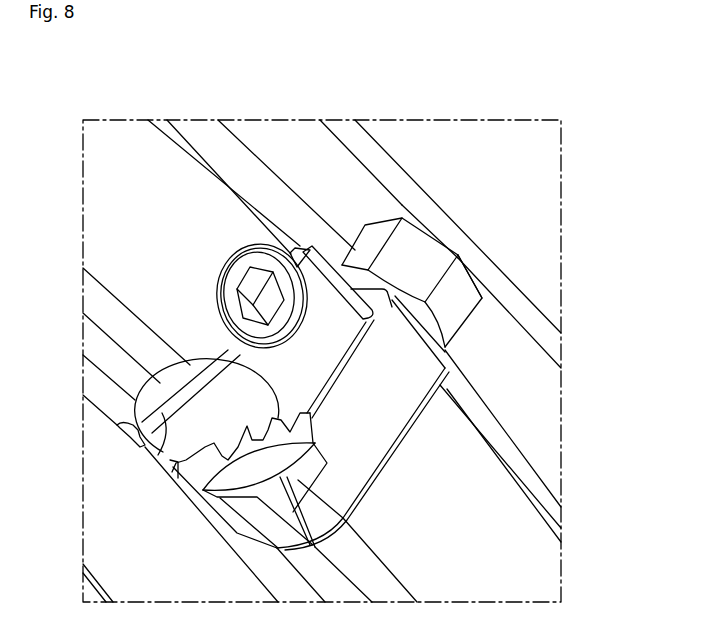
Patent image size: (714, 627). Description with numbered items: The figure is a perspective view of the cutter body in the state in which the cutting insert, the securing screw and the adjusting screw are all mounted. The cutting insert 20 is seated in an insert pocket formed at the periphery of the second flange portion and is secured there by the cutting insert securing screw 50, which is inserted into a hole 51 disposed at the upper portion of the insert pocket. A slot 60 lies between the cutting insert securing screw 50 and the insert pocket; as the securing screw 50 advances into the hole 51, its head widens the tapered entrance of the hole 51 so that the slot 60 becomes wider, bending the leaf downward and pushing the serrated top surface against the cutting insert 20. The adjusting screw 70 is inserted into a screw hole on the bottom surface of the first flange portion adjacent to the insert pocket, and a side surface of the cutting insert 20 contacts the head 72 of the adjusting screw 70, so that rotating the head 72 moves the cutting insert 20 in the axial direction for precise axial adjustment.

The cutting insert 20 is at (407, 397).
The cutting insert securing screw 50 is at (263, 262).
The hole 51 is at (297, 248).
The slot 60 is at (143, 460).
The adjusting screw 70 is at (420, 252).
The head 72 is at (460, 287).